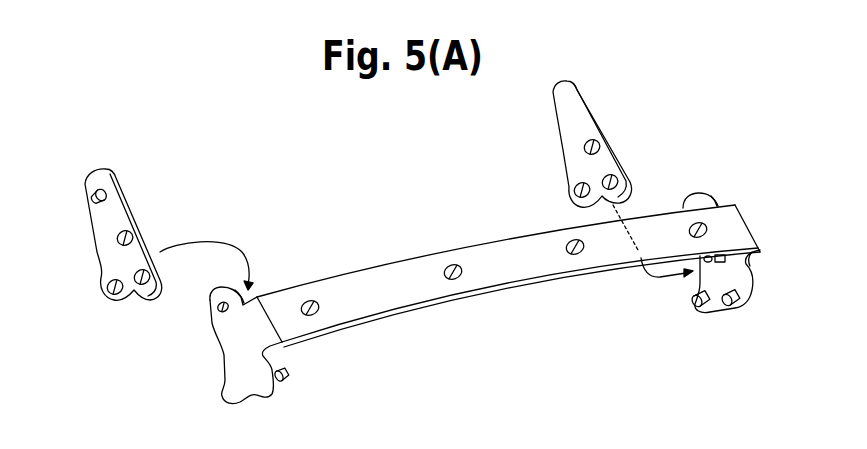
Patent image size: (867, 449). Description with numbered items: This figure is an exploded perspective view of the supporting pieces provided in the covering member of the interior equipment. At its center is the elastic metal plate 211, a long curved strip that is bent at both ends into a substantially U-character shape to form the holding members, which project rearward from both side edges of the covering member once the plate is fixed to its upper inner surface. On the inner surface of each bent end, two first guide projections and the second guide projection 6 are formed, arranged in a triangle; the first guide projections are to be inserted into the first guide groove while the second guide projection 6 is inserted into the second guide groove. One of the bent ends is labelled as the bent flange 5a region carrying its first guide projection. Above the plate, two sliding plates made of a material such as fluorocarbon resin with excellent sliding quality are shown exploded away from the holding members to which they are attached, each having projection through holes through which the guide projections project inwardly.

The elastic metal plate 211 is at (468, 258).
The first guide projection 5a is at (752, 280).
The second guide projection 6 is at (698, 303).